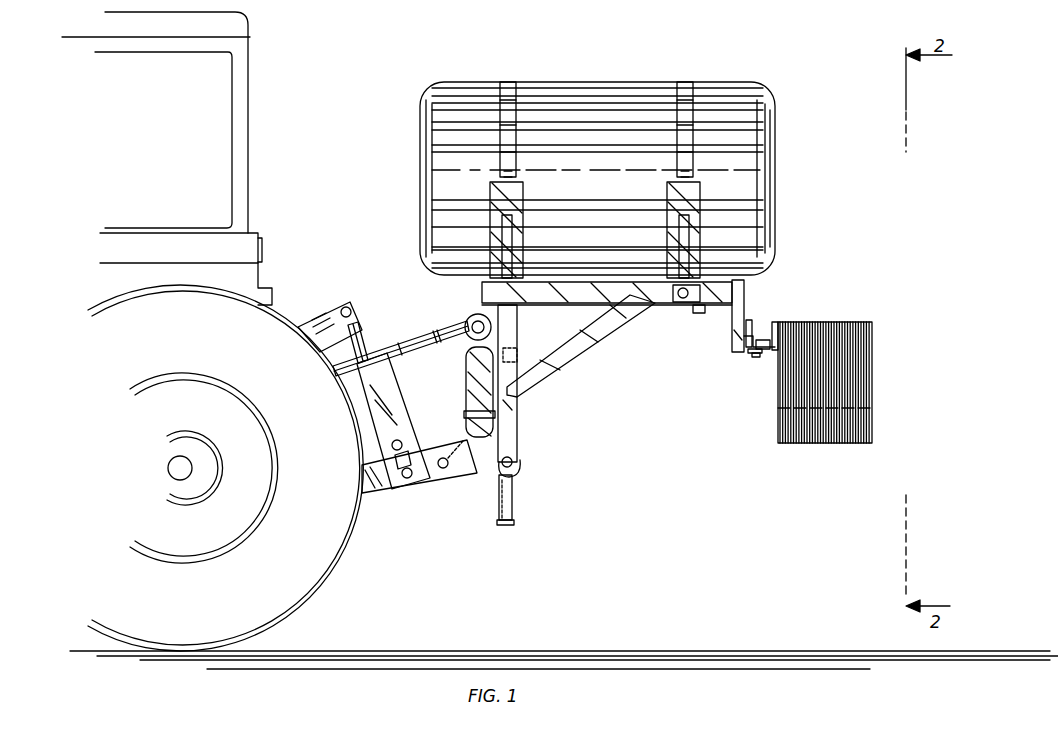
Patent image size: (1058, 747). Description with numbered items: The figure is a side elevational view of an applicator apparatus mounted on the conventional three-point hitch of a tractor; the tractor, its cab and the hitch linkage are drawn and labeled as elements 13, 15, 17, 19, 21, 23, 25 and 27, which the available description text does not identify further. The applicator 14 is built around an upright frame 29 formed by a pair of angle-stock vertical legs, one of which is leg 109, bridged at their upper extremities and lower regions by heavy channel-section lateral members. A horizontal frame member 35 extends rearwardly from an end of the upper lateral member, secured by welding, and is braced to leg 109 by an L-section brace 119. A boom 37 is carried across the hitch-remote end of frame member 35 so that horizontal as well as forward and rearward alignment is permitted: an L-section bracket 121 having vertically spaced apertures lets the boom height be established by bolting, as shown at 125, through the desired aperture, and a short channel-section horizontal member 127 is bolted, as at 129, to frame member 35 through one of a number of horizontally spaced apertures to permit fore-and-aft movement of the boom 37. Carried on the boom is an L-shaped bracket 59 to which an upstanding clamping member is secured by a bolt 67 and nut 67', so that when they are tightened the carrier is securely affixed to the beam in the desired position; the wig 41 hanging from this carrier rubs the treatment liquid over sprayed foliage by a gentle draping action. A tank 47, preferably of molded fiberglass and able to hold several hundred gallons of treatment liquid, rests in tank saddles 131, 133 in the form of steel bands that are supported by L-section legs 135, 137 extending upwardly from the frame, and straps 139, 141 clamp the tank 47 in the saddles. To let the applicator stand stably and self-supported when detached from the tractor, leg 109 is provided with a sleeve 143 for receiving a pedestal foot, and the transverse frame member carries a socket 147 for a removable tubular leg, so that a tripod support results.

The brush apparatus 13 is at (836, 478).
The applicator 14 is at (776, 446).
The lower link 15 is at (437, 482).
The tractor 17 is at (264, 208).
The pivot pin 19 is at (517, 353).
The hook 21 is at (521, 468).
The tractor cab 23 is at (250, 104).
The upper hitch bracket 25 is at (316, 312).
The hitch plate 27 is at (393, 406).
The upright frame 29 is at (520, 429).
The horizontal frame member 35 is at (662, 300).
The boom 37 is at (757, 335).
The wig 41 is at (872, 438).
The tank 47 is at (768, 100).
The L-shaped bracket 59 is at (770, 354).
The bolt 67 is at (733, 377).
The nut 67' is at (806, 323).
The vertical leg 109 is at (512, 516).
The L-section brace 119 is at (553, 368).
The L-section bracket 121 is at (745, 285).
The bolting 125 is at (763, 340).
The channel-section horizontal member 127 is at (750, 318).
The bolt 129 is at (675, 306).
The tank saddle 131 is at (490, 205).
The tank saddle 133 is at (688, 218).
The L-section leg 135 is at (690, 238).
The L-section leg 137 is at (505, 238).
The strap 139 is at (697, 82).
The strap 141 is at (505, 80).
The sleeve 143 is at (510, 526).
The socket 147 is at (700, 313).